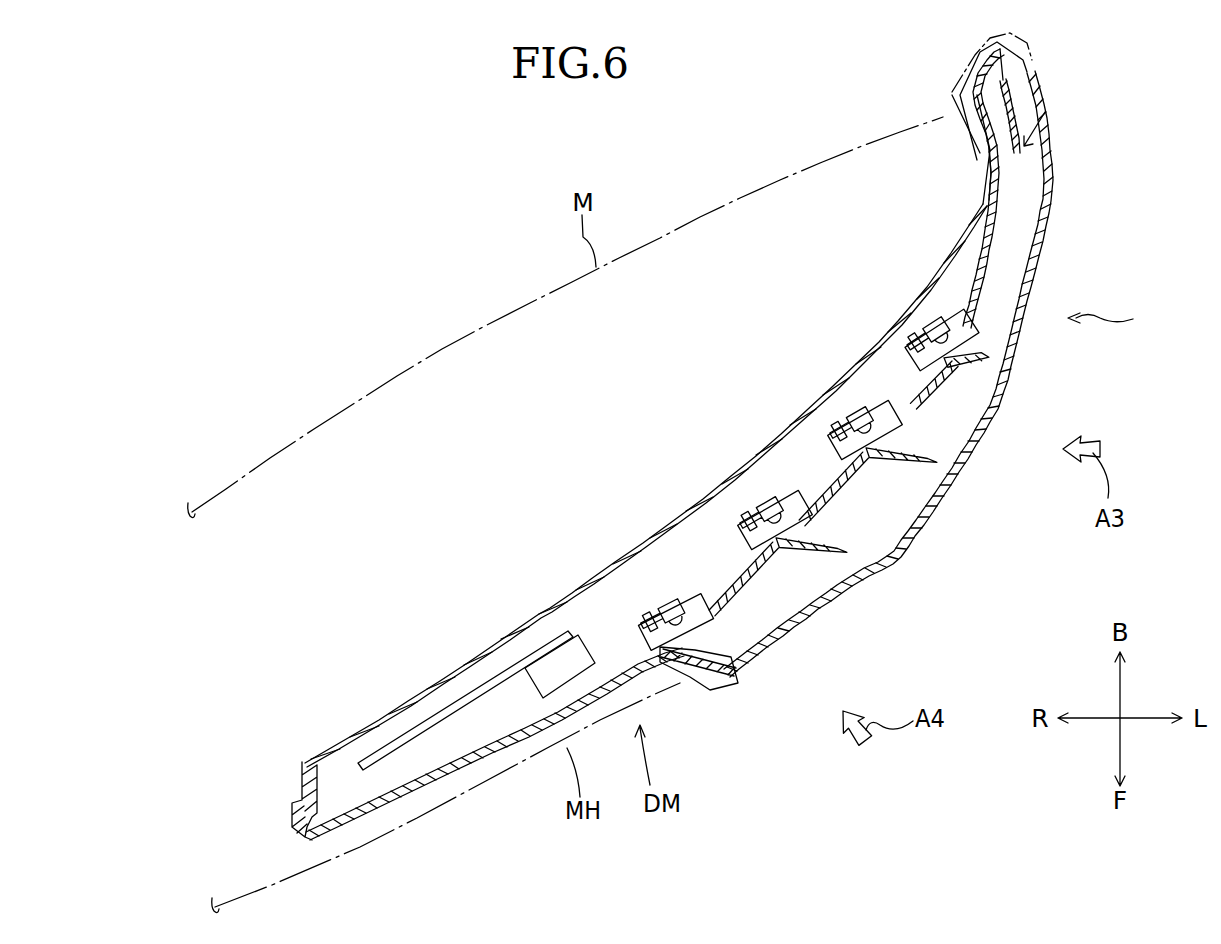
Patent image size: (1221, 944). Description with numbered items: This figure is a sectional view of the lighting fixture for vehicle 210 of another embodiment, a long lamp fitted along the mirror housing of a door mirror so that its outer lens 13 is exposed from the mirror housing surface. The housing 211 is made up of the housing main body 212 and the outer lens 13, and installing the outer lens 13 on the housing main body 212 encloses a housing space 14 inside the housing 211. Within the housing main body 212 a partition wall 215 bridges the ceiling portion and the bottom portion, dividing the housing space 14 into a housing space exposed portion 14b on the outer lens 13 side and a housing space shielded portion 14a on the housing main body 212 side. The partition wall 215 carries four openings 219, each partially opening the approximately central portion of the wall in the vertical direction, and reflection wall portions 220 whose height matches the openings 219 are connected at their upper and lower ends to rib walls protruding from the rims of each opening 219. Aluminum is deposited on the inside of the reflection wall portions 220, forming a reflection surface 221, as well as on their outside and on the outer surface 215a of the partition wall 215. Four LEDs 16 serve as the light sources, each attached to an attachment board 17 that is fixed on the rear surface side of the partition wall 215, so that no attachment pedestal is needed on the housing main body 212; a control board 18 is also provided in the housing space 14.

The outer lens 13 is at (695, 455).
The housing space 14 is at (1052, 122).
The housing space shielded portion 14a is at (972, 245).
The housing space exposed portion 14b is at (1047, 157).
The LED 16 is at (673, 627).
The attachment board 17 is at (653, 620).
The control board 18 is at (493, 680).
The lighting fixture for vehicle 210 is at (688, 455).
The housing 211 is at (1123, 320).
The housing main body 212 is at (557, 603).
The partition wall 215 is at (1000, 252).
The outer surface of the partition wall 215a is at (1000, 212).
The opening 219 is at (708, 623).
The reflection wall portion 220 is at (972, 362).
The reflection surface 221 is at (740, 658).